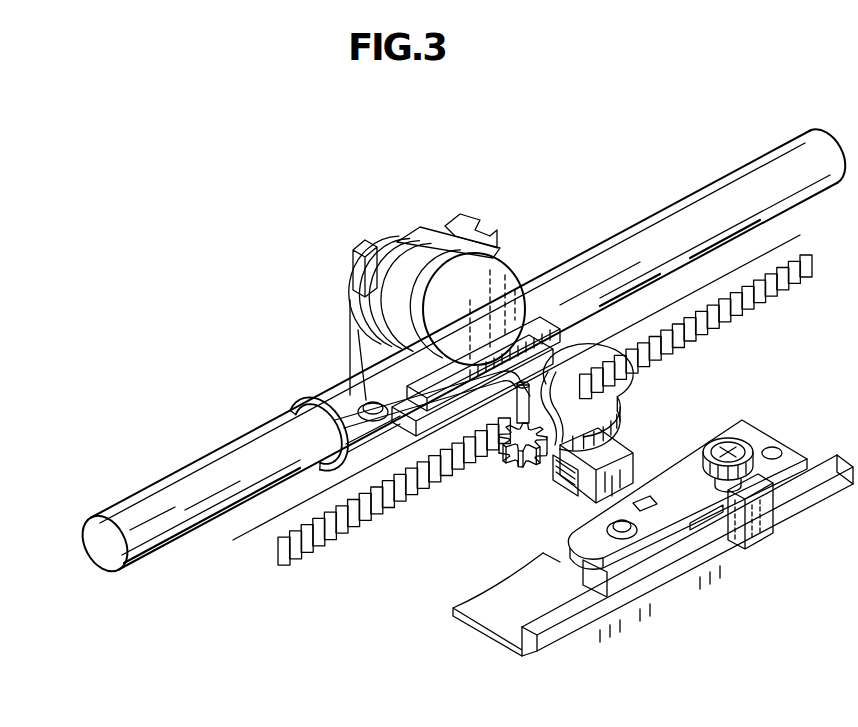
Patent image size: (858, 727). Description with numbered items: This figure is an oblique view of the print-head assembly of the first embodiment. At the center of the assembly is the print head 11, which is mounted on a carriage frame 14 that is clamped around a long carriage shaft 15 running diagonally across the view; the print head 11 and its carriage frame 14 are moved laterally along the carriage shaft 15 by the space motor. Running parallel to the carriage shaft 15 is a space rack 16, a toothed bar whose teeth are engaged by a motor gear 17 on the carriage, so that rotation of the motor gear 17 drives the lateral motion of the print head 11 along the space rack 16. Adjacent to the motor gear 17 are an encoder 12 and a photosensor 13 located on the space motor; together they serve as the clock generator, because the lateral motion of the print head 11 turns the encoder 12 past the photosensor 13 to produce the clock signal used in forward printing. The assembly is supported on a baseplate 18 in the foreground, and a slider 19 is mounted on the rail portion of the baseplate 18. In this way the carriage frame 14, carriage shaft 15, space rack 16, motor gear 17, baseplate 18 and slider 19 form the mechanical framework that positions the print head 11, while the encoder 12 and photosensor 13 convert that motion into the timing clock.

The print head 11 is at (432, 235).
The encoder 12 is at (610, 401).
The photosensor 13 is at (628, 450).
The carriage frame 14 is at (333, 389).
The carriage shaft 15 is at (633, 230).
The space rack 16 is at (797, 251).
The motor gear 17 is at (506, 461).
The baseplate 18 is at (536, 653).
The slider 19 is at (754, 541).